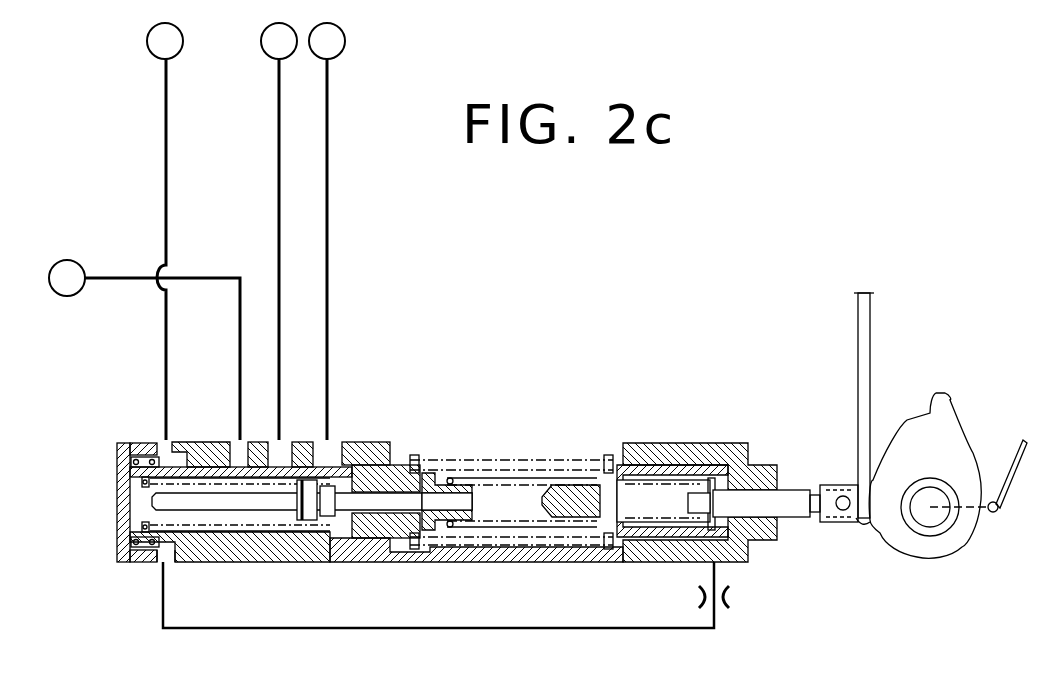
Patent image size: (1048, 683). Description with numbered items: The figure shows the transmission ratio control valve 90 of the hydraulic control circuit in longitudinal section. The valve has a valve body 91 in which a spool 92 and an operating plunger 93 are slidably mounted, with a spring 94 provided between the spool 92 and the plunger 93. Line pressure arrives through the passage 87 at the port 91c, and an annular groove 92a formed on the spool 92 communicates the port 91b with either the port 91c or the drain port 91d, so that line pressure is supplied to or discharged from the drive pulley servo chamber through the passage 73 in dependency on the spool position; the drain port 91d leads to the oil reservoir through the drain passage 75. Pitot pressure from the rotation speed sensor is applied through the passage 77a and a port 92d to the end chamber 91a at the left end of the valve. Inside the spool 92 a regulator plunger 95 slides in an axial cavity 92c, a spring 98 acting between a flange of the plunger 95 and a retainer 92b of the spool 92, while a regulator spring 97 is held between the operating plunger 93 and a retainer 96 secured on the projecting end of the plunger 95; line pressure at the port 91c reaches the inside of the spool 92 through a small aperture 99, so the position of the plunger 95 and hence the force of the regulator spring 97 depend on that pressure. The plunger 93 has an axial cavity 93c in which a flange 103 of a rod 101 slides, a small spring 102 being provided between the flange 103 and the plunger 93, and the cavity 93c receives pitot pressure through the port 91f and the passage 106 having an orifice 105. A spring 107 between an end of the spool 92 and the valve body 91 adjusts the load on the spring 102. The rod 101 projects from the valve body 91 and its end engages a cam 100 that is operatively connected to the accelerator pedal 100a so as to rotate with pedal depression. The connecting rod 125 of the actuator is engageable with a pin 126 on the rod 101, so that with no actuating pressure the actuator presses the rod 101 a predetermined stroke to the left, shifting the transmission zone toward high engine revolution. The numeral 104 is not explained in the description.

The passage 73 is at (281, 283).
The drain passage 75 is at (238, 276).
The passage 77a is at (168, 210).
The passage 87 is at (329, 290).
The transmission ratio control valve 90 is at (547, 566).
The valve body 91 is at (373, 455).
The end chamber 91a is at (150, 455).
The port 91b is at (272, 455).
The port 91c is at (331, 468).
The drain port 91d is at (224, 455).
The port 91f is at (168, 567).
The spool 92 is at (373, 528).
The annular groove 92a is at (278, 475).
The retainer 92b is at (128, 488).
The axial cavity 92c is at (213, 522).
The port 92d is at (126, 482).
The operating plunger 93 is at (655, 467).
The axial cavity 93c is at (672, 498).
The spring 94 is at (598, 462).
The regulator plunger 95 is at (273, 503).
The retainer 96 is at (440, 514).
The regulator spring 97 is at (576, 483).
The spring 98 is at (146, 516).
The small aperture 99 is at (345, 455).
The cam 100 is at (945, 413).
The accelerator pedal 100a is at (1013, 453).
The rod 101 is at (790, 502).
The small spring 102 is at (618, 497).
The flange 103 is at (740, 478).
The bore 104 is at (672, 556).
The orifice 105 is at (728, 594).
The passage 106 is at (435, 629).
The spring 107 is at (142, 548).
The connecting rod 125 is at (898, 338).
The pin 126 is at (857, 482).